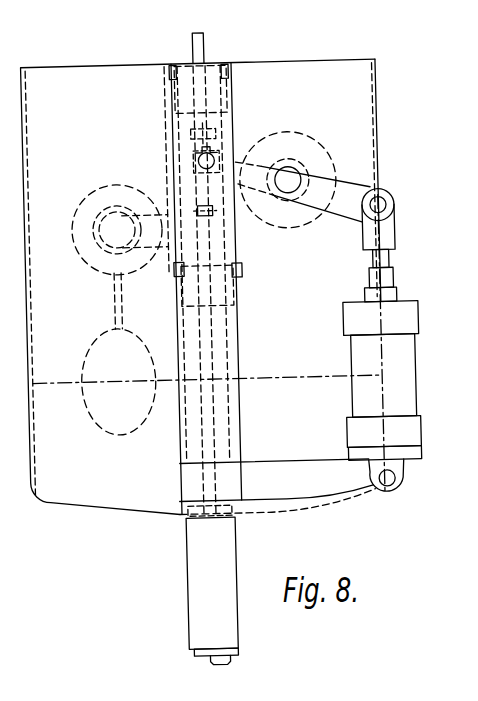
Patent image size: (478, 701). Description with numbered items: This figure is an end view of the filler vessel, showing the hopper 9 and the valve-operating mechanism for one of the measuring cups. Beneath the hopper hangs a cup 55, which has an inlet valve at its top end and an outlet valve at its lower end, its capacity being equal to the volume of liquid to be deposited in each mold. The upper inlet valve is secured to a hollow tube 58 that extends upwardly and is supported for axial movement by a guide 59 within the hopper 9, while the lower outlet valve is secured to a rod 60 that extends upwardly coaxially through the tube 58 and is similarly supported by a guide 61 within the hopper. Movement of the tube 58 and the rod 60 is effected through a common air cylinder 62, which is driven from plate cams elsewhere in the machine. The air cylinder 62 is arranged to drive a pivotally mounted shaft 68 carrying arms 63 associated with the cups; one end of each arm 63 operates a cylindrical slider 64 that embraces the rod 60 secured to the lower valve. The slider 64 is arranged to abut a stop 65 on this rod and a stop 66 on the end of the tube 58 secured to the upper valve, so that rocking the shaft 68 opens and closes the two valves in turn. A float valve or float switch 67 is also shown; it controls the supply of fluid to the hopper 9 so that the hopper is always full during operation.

The hopper 9 is at (29, 449).
The cup 55 is at (193, 567).
The hollow tube 58 is at (214, 407).
The guide 59 is at (180, 278).
The rod 60 is at (216, 45).
The guide 61 is at (195, 62).
The air cylinder 62 is at (351, 395).
The arm 63 is at (241, 157).
The cylindrical slider 64 is at (196, 164).
The stop 65 is at (195, 135).
The stop 66 is at (190, 205).
The float valve or float switch 67 is at (107, 257).
The pivotally mounted shaft 68 is at (284, 193).